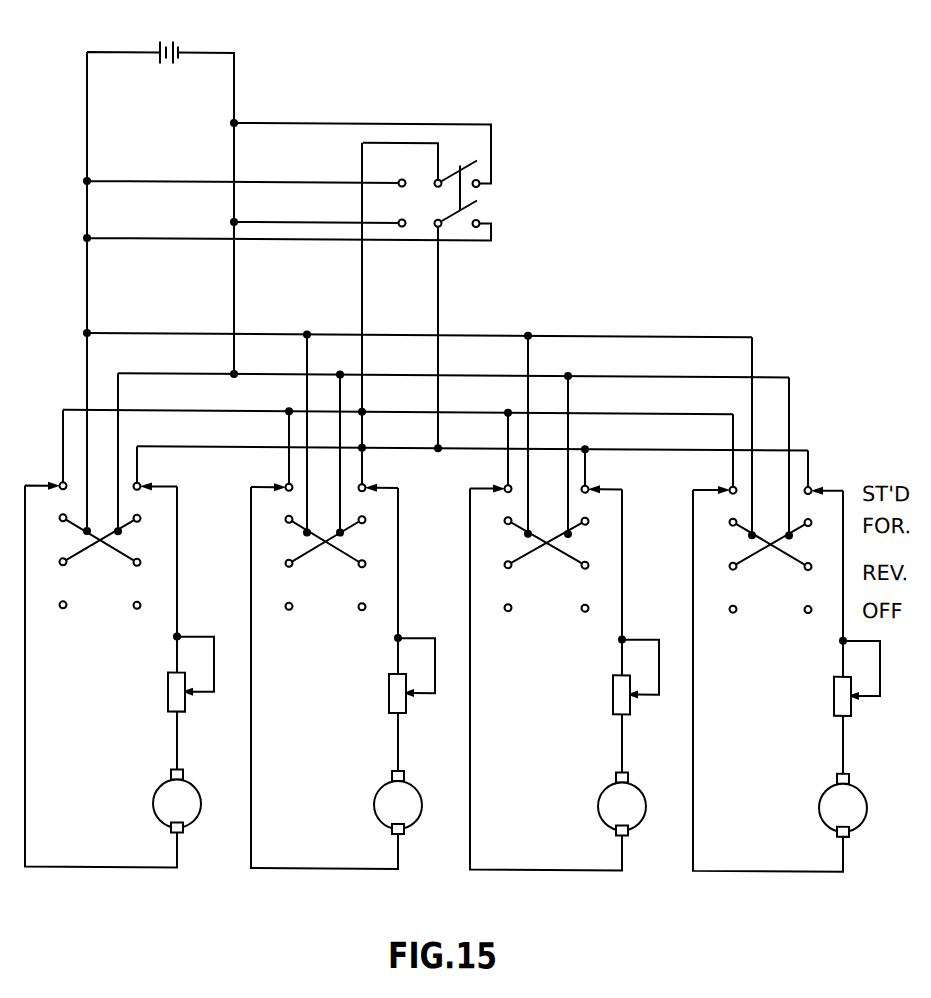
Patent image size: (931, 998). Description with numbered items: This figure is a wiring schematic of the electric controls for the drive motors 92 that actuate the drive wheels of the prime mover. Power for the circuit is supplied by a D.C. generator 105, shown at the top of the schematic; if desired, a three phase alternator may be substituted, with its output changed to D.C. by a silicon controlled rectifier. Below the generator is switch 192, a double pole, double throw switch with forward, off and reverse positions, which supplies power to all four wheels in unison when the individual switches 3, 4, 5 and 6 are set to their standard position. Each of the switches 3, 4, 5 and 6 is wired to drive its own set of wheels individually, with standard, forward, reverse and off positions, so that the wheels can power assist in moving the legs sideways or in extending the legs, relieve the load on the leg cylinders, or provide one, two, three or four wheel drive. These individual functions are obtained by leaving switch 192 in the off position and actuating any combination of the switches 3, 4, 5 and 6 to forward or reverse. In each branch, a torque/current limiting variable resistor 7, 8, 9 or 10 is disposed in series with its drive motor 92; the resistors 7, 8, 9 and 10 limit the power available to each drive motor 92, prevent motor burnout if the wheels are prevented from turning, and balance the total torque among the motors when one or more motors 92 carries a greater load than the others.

The D.C. generator 105 is at (175, 40).
The double pole, double throw switch 192 is at (483, 198).
The switch 3 is at (119, 675).
The switch 4 is at (343, 676).
The switch 5 is at (564, 677).
The switch 6 is at (787, 679).
The torque/current limiting variable resistor 7 is at (186, 699).
The torque/current limiting variable resistor 8 is at (407, 700).
The torque/current limiting variable resistor 9 is at (631, 701).
The torque/current limiting variable resistor 10 is at (858, 703).
The drive motor 92 is at (818, 803).